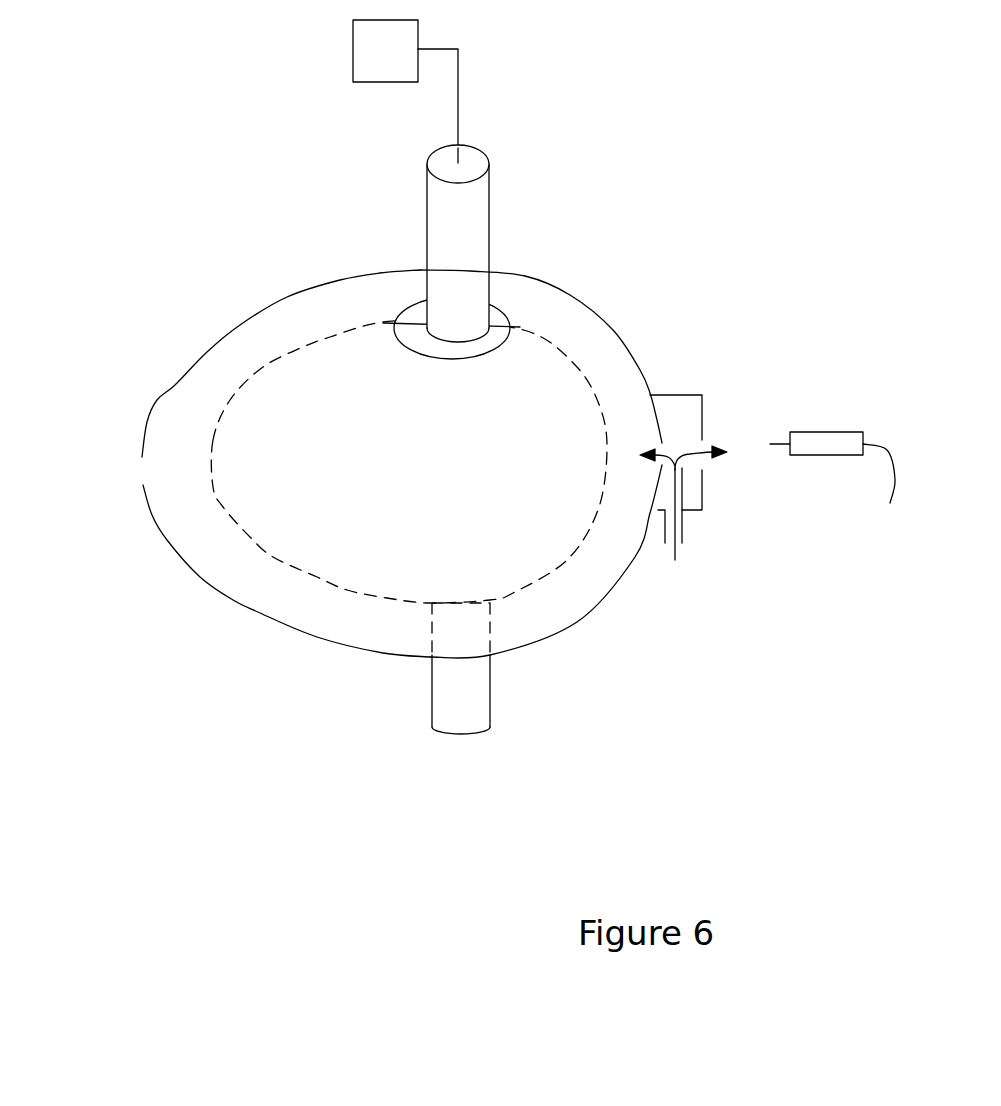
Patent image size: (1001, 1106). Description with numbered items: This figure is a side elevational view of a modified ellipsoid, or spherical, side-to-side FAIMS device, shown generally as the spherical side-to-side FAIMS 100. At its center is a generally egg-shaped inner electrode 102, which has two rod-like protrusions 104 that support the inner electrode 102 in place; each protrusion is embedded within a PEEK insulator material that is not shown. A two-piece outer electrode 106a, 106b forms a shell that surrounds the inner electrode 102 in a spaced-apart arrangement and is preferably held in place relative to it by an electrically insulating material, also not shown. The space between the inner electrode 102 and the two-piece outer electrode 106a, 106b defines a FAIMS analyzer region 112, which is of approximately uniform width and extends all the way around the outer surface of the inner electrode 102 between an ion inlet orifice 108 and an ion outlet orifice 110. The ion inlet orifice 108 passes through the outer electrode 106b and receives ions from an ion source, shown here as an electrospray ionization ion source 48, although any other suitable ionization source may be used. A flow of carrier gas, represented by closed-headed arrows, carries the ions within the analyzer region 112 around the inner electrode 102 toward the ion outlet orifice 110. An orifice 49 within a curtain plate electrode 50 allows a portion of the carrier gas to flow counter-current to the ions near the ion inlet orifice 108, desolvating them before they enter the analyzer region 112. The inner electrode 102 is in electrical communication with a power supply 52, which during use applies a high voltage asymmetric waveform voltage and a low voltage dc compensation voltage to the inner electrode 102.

The spherical side-to-side FAIMS 100 is at (98, 135).
The power supply 52 is at (353, 37).
The rod-like protrusions 104 is at (490, 213).
The outer electrode 106a is at (286, 296).
The outer electrode 106b is at (570, 297).
The ion inlet orifice 108 is at (663, 443).
The electrospray ionization ion source 48 is at (843, 430).
The orifice 49 is at (703, 442).
The curtain plate electrode 50 is at (702, 483).
The ion outlet orifice 110 is at (142, 473).
The inner electrode 102 is at (268, 552).
The FAIMS analyzer region 112 is at (550, 612).